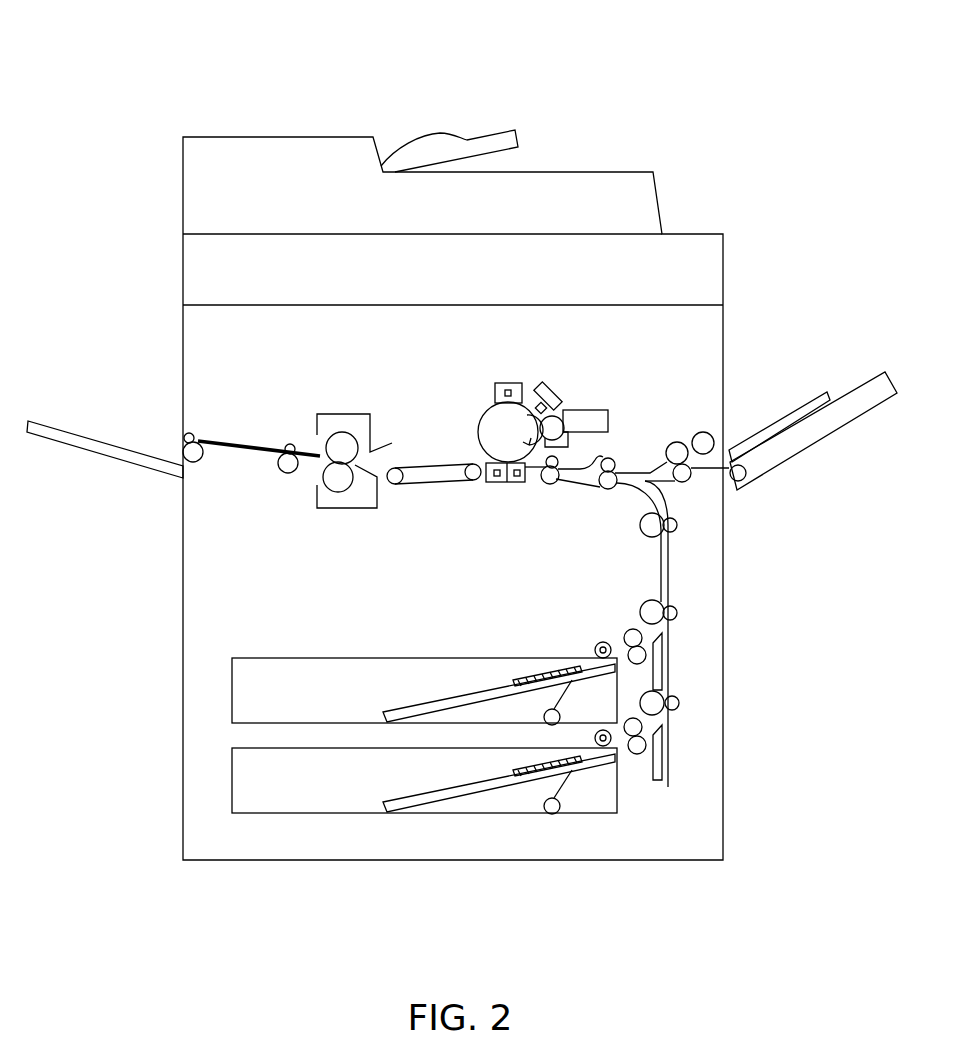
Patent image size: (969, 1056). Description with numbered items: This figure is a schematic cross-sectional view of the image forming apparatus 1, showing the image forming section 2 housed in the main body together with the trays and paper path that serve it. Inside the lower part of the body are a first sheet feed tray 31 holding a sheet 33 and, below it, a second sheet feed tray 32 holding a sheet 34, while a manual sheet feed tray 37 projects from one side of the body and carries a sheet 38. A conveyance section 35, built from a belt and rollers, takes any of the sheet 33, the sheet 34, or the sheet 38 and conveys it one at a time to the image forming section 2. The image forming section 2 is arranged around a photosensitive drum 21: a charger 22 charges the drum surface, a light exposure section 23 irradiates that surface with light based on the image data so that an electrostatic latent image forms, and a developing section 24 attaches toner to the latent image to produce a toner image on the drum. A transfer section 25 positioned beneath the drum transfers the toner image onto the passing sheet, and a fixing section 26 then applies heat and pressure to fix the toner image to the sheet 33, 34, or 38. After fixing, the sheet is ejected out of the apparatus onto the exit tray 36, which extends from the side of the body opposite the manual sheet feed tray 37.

The image forming apparatus 1 is at (491, 97).
The image forming section 2 is at (397, 393).
The photosensitive drum 21 is at (480, 422).
The charger 22 is at (503, 382).
The light exposure section 23 is at (550, 384).
The developing section 24 is at (611, 427).
The transfer section 25 is at (504, 484).
The fixing section 26 is at (328, 514).
The first sheet feed tray 31 is at (242, 677).
The second sheet feed tray 32 is at (242, 766).
The sheet 33 is at (457, 695).
The sheet 34 is at (470, 787).
The conveyance section 35 is at (695, 575).
The exit tray 36 is at (95, 455).
The manual sheet feed tray 37 is at (850, 390).
The sheet 38 is at (785, 415).